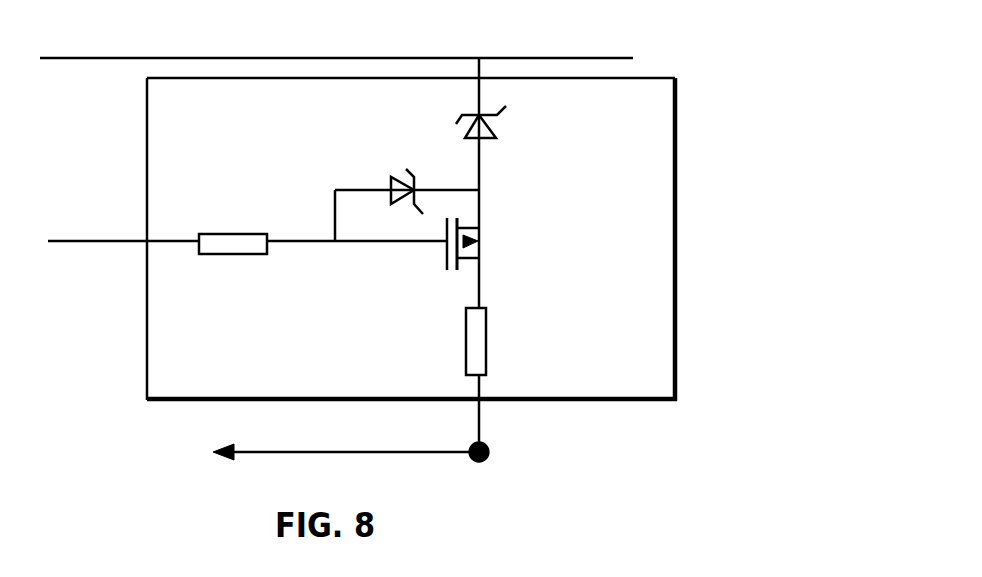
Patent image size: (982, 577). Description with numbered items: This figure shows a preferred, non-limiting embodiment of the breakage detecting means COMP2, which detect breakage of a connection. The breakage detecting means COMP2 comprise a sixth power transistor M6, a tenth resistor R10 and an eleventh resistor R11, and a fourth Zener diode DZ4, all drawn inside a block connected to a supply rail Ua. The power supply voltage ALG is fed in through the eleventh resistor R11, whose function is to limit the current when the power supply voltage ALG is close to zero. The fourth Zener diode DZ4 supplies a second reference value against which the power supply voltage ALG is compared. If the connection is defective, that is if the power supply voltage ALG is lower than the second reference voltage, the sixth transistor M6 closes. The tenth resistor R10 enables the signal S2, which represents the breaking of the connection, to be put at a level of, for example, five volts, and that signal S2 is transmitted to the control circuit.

The supply voltage rail Ua is at (336, 36).
The breakage detecting means COMP2 is at (675, 118).
The fourth Zener diode DZ4 is at (514, 131).
The power supply voltage ALG is at (122, 227).
The eleventh resistor R11 is at (323, 227).
The sixth power transistor M6 is at (497, 244).
The tenth resistor R10 is at (513, 341).
The signal representing breaking of the connection S2 is at (514, 457).